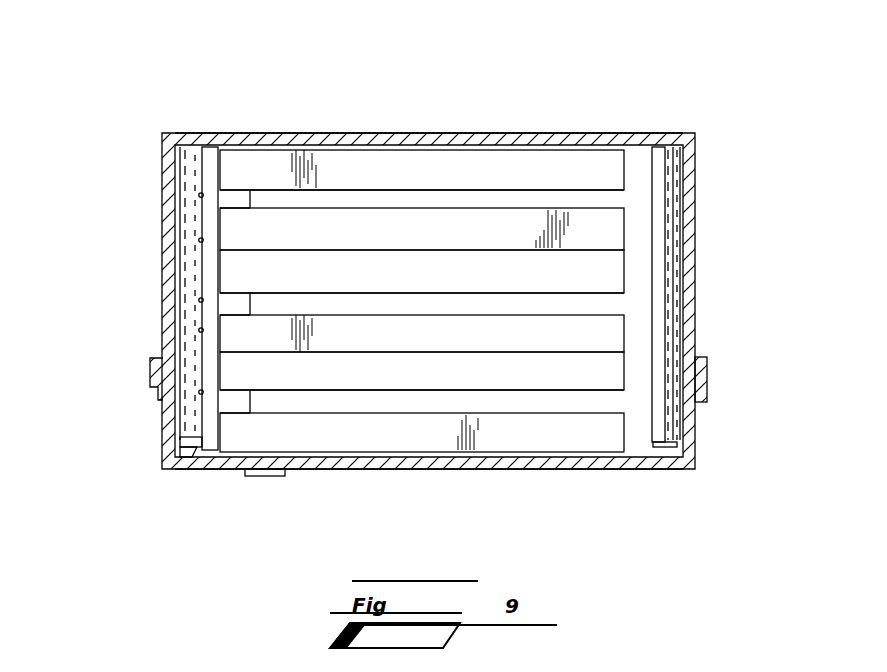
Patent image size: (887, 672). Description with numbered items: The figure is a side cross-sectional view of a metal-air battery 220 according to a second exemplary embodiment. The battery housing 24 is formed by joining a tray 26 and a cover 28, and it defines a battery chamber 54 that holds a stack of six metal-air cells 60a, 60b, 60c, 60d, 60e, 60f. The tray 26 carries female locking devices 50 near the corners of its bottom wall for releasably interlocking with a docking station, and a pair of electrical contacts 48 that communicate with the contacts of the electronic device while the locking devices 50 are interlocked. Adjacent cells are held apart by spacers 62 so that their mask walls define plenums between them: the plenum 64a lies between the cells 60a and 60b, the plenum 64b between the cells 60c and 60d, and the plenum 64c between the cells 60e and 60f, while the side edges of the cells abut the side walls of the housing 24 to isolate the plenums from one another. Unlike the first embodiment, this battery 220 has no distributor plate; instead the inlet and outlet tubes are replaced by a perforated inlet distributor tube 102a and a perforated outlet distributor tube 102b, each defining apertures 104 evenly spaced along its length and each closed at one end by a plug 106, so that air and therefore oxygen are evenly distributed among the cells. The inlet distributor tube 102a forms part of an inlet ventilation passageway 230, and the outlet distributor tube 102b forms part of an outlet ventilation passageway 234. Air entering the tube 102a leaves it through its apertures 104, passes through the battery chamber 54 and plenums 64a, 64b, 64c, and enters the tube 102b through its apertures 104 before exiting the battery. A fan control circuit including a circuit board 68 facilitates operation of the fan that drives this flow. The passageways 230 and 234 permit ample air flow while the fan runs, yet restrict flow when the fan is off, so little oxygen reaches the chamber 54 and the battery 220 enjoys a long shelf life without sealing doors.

The metal-air battery 220 is at (408, 289).
The battery housing 24 is at (428, 276).
The cover 28 is at (580, 134).
The tray 26 is at (307, 470).
The electrical contacts 48 is at (257, 477).
The female locking devices 50 is at (407, 446).
The circuit board 68 is at (177, 445).
The perforated inlet distributor tube 102a is at (399, 304).
The perforated outlet distributor tube 102b is at (708, 249).
The apertures 104 is at (197, 193).
The plug 106 is at (193, 450).
The inlet ventilation passageway 230 is at (211, 163).
The outlet ventilation passageway 234 is at (645, 164).
The metal-air cell 60a is at (433, 183).
The metal-air cell 60b is at (421, 244).
The metal-air cell 60c is at (421, 284).
The metal-air cell 60d is at (423, 345).
The metal-air cell 60e is at (423, 384).
The metal-air cell 60f is at (413, 444).
The spacers 62 is at (250, 203).
The plenum 64a is at (472, 200).
The plenum 64b is at (622, 305).
The plenum 64c is at (532, 403).
The battery chamber 54 is at (639, 440).